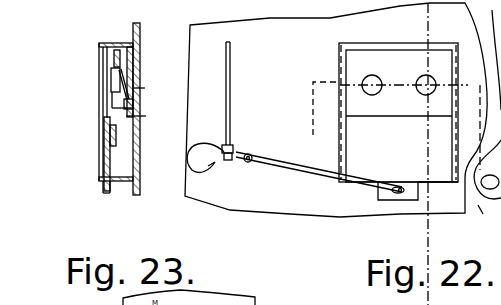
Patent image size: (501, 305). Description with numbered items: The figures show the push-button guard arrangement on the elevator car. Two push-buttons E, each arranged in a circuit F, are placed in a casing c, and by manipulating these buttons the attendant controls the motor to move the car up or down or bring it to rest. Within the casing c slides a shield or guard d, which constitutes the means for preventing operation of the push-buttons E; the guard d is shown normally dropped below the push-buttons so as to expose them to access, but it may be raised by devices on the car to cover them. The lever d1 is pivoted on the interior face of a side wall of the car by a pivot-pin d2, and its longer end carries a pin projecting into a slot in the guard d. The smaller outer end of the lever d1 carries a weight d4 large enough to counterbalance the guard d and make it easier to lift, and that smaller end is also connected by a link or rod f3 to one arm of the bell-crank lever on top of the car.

In FIG. 23, the casing c is at (99, 59).
In FIG. 22, the casing c is at (396, 48).
In FIG. 23, the push-buttons E is at (112, 80).
In FIG. 22, the push-buttons E is at (378, 88).
In FIG. 23, the shield or guard d is at (104, 124).
In FIG. 22, the shield or guard d is at (402, 158).
In FIG. 22, the link or rod f3 is at (236, 68).
In FIG. 22, the circuit F is at (310, 109).
In FIG. 22, the lever d1 is at (301, 168).
In FIG. 22, the pivot-pin d2 is at (254, 157).
In FIG. 22, the weight d4 is at (207, 160).